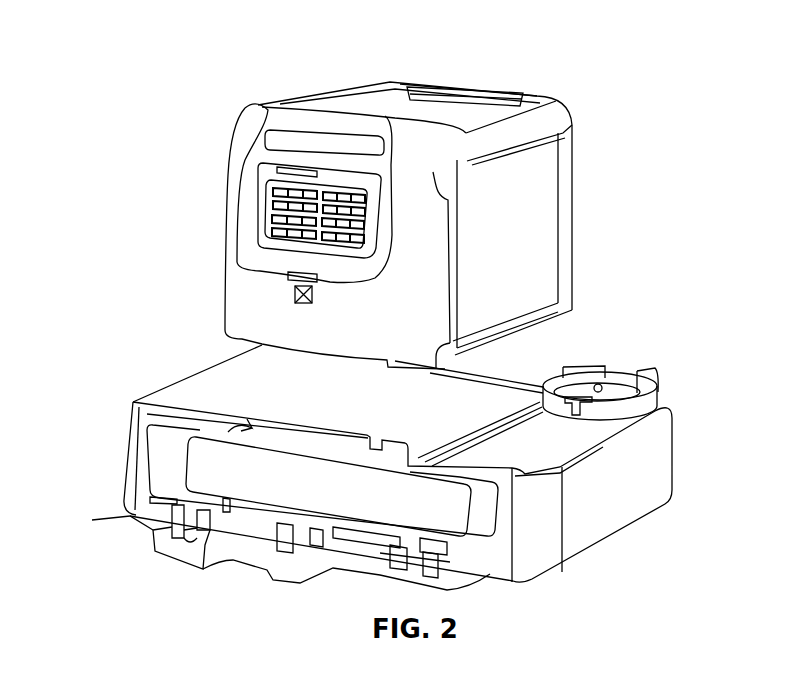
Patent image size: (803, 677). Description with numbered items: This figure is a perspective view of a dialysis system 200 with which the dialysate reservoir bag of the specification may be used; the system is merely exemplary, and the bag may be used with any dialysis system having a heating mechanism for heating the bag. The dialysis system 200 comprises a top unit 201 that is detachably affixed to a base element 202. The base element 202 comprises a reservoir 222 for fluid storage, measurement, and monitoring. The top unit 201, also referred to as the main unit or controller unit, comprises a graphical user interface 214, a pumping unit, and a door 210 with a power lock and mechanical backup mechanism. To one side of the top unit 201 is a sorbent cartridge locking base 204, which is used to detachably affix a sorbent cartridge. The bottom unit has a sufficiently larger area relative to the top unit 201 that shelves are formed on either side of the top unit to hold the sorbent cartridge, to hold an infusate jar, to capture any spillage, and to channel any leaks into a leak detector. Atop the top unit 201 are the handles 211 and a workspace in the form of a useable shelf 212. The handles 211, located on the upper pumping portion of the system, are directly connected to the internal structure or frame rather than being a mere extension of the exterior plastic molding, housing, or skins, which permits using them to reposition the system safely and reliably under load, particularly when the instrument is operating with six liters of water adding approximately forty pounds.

The dialysis system 200 is at (127, 72).
The top unit 201 is at (282, 145).
The base element 202 is at (133, 445).
The sorbent cartridge locking base 204 is at (658, 398).
The door 210 is at (417, 173).
The handles 211 is at (443, 87).
The useable shelf 212 is at (483, 117).
The graphical user interface 214 is at (264, 210).
The reservoir 222 is at (480, 498).